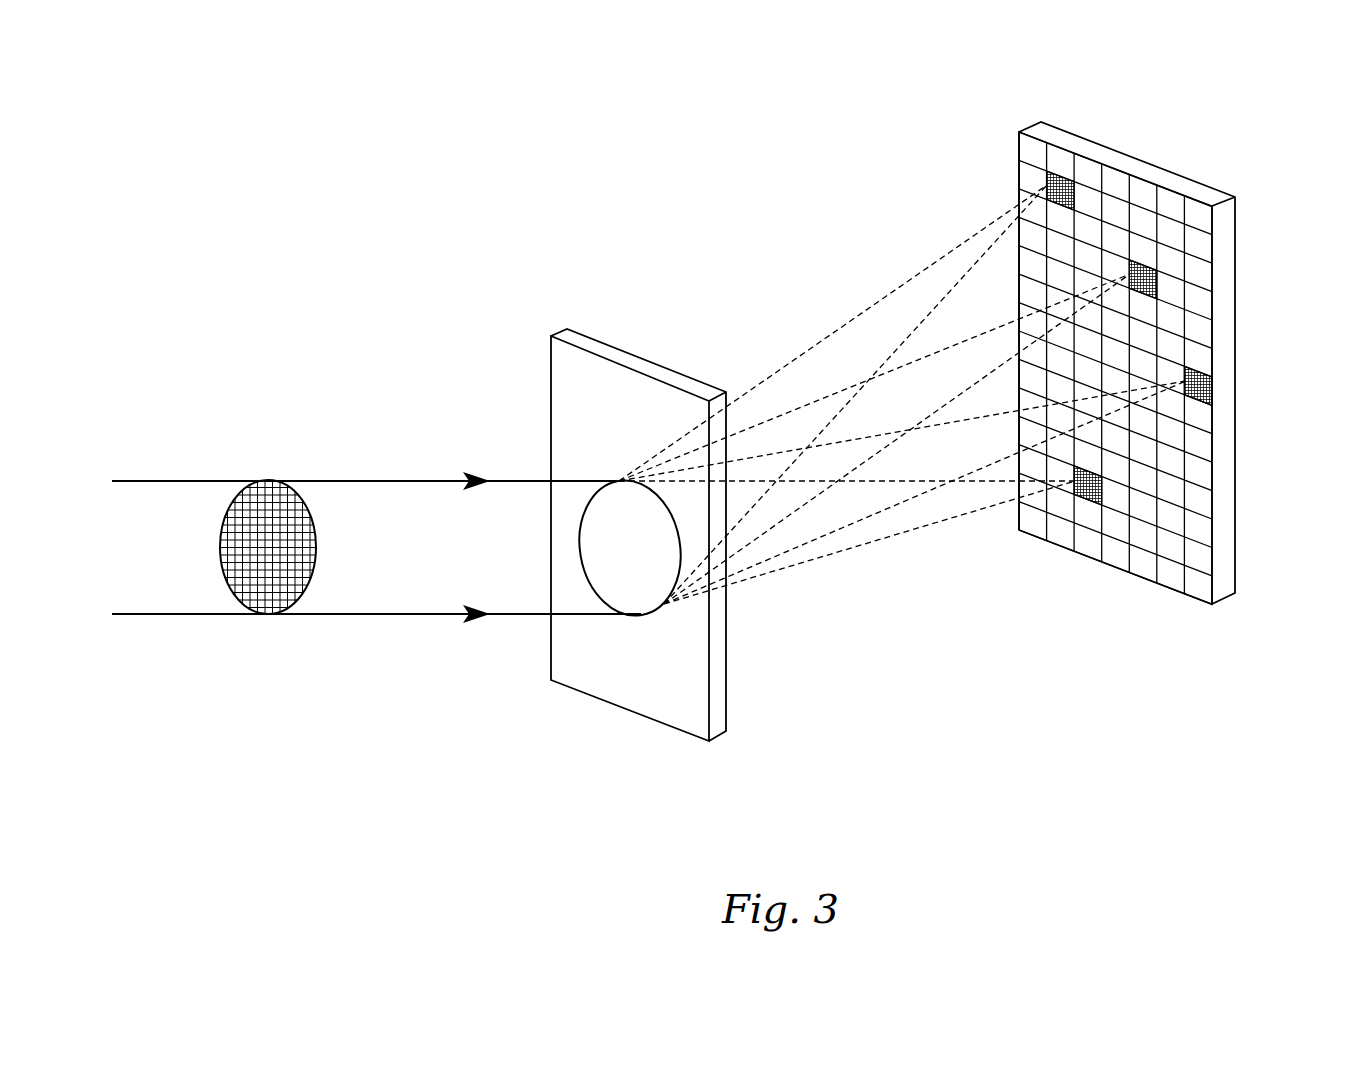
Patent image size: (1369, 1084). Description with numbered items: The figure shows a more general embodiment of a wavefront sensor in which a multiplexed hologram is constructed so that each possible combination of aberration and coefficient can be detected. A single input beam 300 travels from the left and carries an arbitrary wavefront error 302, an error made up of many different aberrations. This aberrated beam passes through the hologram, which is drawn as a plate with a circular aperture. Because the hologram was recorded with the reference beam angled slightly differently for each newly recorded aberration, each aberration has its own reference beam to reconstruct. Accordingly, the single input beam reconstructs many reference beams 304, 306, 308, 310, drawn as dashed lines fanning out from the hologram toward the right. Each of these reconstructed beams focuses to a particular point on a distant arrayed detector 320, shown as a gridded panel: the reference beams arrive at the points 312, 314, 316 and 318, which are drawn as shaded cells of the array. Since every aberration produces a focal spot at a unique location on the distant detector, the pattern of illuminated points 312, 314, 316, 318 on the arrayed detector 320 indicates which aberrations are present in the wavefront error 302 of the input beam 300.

The input beam 300 is at (178, 480).
The wavefront error 302 is at (292, 612).
The reference beam 304 is at (908, 291).
The reference beam 306 is at (982, 341).
The reference beam 308 is at (1003, 417).
The reference beam 310 is at (957, 522).
The focal point 312 is at (1055, 178).
The focal point 314 is at (1156, 285).
The focal point 316 is at (1212, 402).
The focal point 318 is at (1088, 500).
The arrayed detector 320 is at (1199, 182).